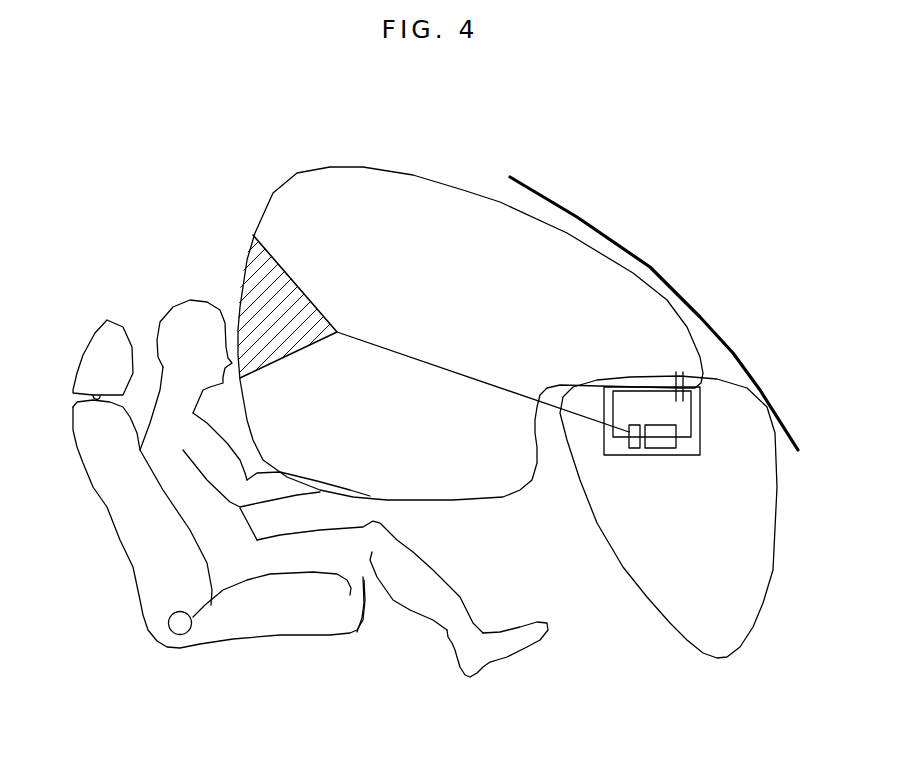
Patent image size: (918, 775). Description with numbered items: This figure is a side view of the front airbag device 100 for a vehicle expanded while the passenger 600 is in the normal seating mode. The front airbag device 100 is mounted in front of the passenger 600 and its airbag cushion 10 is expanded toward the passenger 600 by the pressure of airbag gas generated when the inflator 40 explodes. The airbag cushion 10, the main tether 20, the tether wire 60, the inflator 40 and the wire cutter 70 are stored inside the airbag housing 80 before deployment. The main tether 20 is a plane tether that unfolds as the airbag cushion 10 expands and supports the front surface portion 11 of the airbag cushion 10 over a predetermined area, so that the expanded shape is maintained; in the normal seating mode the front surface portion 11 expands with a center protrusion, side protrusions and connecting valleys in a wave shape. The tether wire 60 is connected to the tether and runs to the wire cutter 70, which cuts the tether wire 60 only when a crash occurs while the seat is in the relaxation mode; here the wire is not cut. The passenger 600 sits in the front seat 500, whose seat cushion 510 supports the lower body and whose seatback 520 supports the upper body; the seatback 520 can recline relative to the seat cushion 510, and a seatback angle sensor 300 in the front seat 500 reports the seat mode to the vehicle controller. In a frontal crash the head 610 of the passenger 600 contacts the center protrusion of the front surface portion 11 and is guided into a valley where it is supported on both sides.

The airbag cushion 10 is at (567, 232).
The front airbag device 100 is at (375, 166).
The front surface portion 11 is at (247, 243).
The main tether 20 is at (290, 270).
The tether wire 60 is at (427, 358).
The airbag housing 80 is at (700, 478).
The wire cutter 70 is at (632, 448).
The inflator 40 is at (677, 445).
The passenger 600 is at (344, 473).
The head 610 is at (183, 313).
The front seat 500 is at (191, 525).
The seatback 520 is at (128, 519).
The seat cushion 510 is at (325, 623).
The seatback angle sensor 300 is at (177, 636).